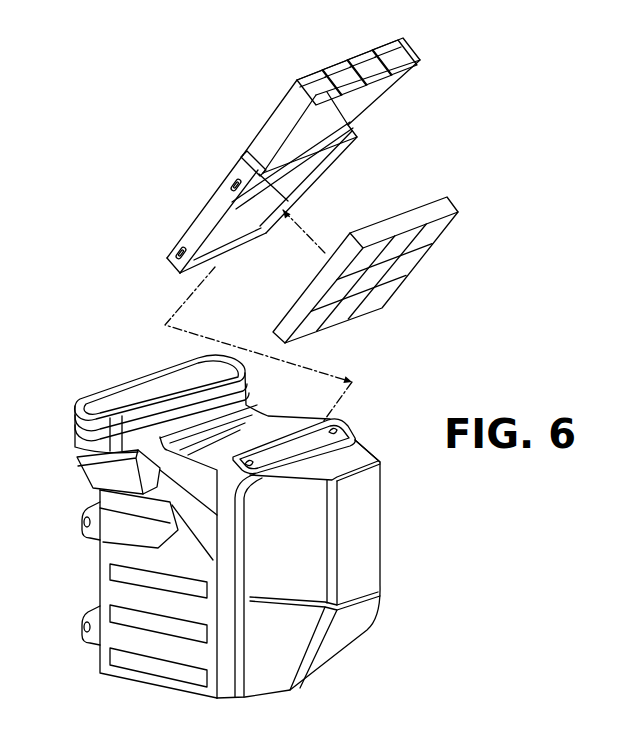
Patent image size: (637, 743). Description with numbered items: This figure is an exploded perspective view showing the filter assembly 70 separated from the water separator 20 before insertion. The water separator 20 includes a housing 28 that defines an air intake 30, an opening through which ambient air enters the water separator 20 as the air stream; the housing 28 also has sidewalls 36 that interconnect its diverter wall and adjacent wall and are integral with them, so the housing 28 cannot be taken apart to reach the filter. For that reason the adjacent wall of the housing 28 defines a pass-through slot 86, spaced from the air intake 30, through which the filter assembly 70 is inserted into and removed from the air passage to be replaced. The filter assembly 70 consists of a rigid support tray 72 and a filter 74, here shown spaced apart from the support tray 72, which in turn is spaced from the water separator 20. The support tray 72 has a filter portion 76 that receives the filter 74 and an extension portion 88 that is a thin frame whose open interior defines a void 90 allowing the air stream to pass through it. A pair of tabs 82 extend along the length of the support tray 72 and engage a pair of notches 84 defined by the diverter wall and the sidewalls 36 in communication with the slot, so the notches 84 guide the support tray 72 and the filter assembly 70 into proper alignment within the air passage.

The water separator 20 is at (73, 571).
The housing 28 is at (370, 434).
The air intake 30 is at (130, 403).
The sidewalls 36 is at (110, 635).
The filter assembly 70 is at (231, 144).
The support tray 72 is at (205, 227).
The filter 74 is at (435, 237).
The filter portion 76 is at (196, 208).
The pair of tabs 82 is at (232, 184).
The pair of notches 84 is at (301, 447).
The pass-through slot 86 is at (272, 459).
The extension portion 88 is at (262, 118).
The void 90 is at (302, 168).